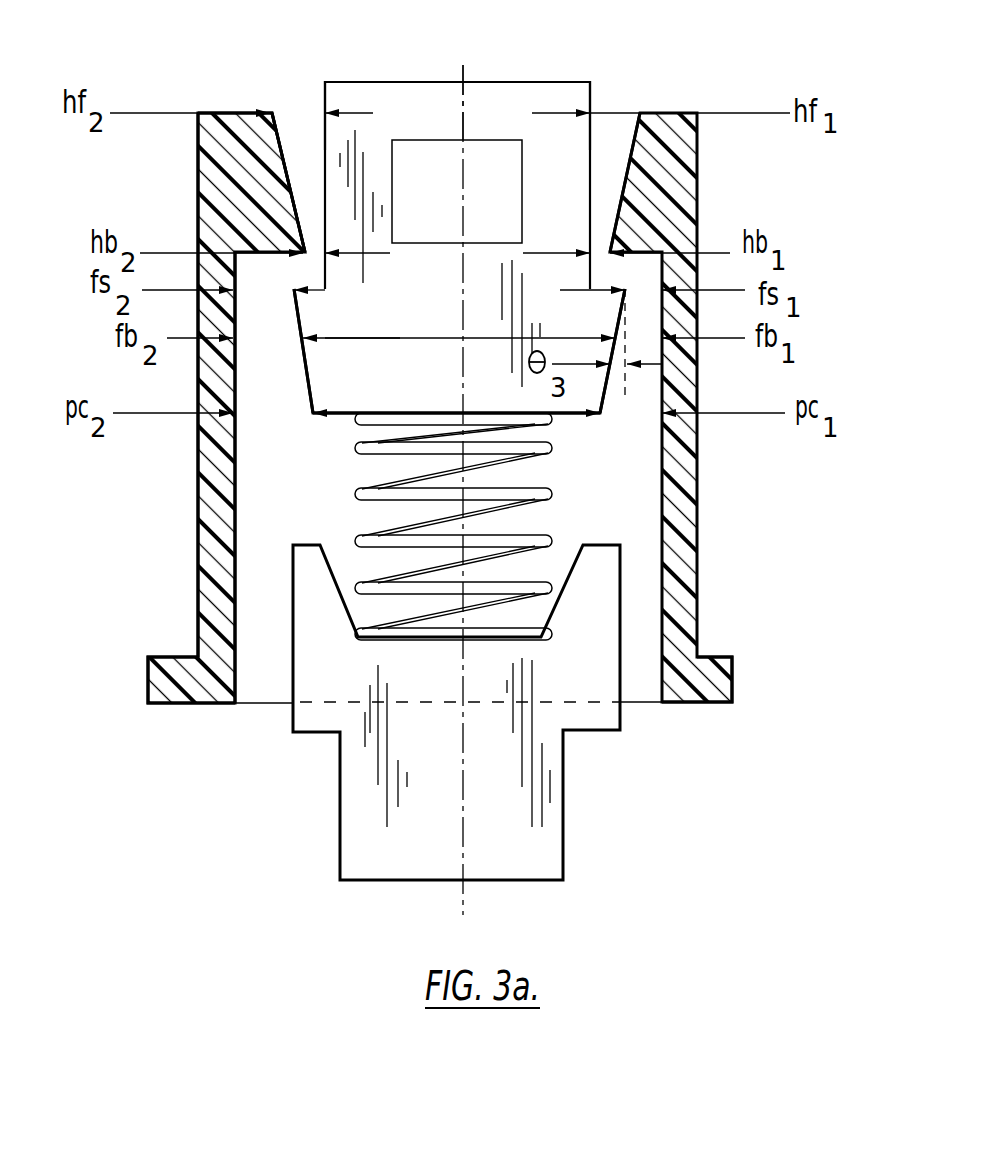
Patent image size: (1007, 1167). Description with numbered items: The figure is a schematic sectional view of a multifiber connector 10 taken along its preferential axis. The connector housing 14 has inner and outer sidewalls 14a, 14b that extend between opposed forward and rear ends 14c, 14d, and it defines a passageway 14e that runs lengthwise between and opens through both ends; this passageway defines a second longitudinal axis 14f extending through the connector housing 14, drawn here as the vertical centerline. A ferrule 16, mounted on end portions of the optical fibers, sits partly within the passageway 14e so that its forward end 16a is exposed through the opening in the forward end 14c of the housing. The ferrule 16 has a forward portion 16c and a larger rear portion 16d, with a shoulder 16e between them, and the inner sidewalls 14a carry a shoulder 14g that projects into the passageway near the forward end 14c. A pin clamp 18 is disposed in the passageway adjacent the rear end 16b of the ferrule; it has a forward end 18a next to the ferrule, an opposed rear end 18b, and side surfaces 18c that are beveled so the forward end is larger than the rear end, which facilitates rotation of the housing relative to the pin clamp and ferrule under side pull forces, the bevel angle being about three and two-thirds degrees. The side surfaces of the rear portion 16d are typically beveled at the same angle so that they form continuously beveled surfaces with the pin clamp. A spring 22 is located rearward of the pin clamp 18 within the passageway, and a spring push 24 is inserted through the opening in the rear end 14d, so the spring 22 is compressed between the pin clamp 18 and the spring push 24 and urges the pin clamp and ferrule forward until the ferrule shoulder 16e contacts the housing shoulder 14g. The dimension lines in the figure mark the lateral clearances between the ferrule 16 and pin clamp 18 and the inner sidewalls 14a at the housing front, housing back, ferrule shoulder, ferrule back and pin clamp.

The multifiber connector 10 is at (783, 537).
The connector housing 14 is at (697, 600).
The inner sidewalls 14a is at (235, 665).
The outer sidewalls 14b is at (198, 592).
The forward end 14c is at (245, 112).
The rear end 14d is at (198, 702).
The passageway 14e is at (635, 645).
The second longitudinal axis 14f is at (463, 72).
The shoulder 14g is at (265, 247).
The ferrule 16 is at (390, 108).
The forward end 16a is at (590, 80).
The rear end 16b is at (363, 337).
The forward portion 16c is at (528, 95).
The rear portion 16d is at (322, 308).
The shoulder 16e is at (595, 287).
The pin clamp 18 is at (365, 370).
The forward end 18a is at (472, 337).
The rear end 18b is at (533, 414).
The side surfaces 18c is at (607, 392).
The spring 22 is at (548, 489).
The spring push 24 is at (563, 815).